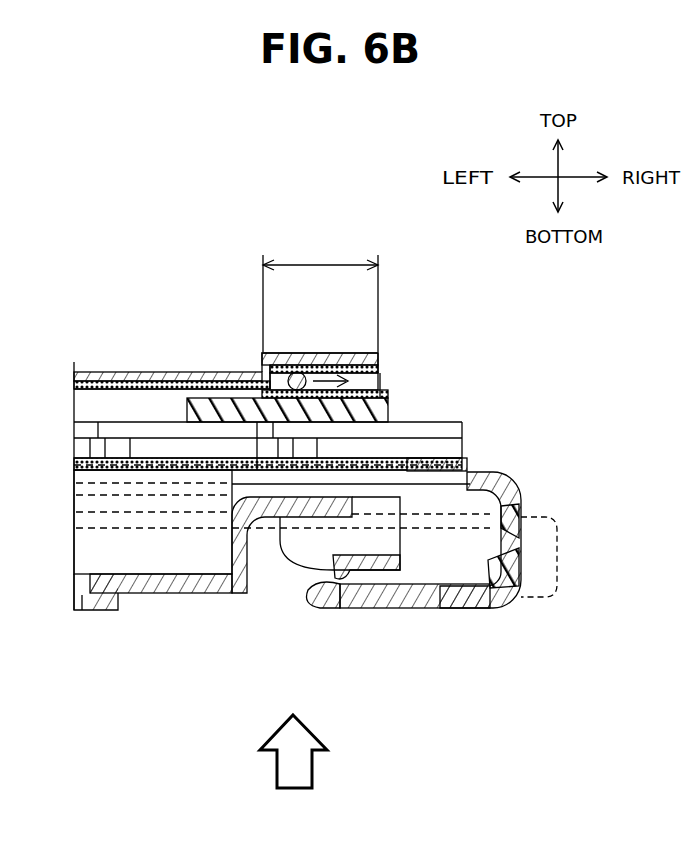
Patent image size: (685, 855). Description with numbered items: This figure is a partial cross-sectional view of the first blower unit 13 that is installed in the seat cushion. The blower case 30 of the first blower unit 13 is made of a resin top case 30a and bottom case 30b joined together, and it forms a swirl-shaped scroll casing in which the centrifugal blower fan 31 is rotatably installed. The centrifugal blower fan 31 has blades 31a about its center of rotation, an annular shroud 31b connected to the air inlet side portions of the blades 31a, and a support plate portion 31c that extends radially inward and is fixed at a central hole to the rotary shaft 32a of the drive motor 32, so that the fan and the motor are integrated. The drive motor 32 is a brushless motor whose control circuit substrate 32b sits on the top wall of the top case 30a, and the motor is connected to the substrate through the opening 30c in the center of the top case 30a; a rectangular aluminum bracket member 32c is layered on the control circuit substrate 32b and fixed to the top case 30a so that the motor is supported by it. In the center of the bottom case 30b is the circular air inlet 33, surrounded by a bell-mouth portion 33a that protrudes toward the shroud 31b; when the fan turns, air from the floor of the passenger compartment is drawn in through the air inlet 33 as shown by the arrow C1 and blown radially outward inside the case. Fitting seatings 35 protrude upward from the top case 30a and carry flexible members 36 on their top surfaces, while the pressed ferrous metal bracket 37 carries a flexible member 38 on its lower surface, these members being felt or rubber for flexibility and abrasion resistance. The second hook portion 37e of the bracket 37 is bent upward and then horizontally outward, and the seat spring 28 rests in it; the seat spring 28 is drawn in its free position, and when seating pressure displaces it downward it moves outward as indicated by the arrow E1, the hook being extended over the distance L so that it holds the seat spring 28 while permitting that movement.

The first blower unit 13 is at (495, 468).
The seat spring 28 is at (262, 354).
The blower case 30 is at (617, 490).
The top case 30a is at (500, 497).
The bottom case 30b is at (475, 604).
The opening 30c is at (393, 480).
The centrifugal blower fan 31 is at (283, 560).
The blades 31a is at (300, 548).
The annular shroud 31b is at (405, 560).
The support plate portion 31c is at (180, 590).
The drive motor 32 is at (150, 555).
The rotary shaft 32a is at (76, 612).
The control circuit substrate 32b is at (390, 462).
The bracket member 32c is at (468, 462).
The air inlet 33 is at (257, 578).
The bell-mouth portion 33a is at (312, 604).
The fitting seating 35 is at (208, 387).
The flexible member 36 is at (380, 386).
The bracket 37 is at (110, 366).
The second hook portion 37e is at (383, 364).
The flexible member 38 is at (405, 385).
The arrow E1 is at (322, 353).
The distance L is at (320, 296).
The arrow C1 is at (312, 768).